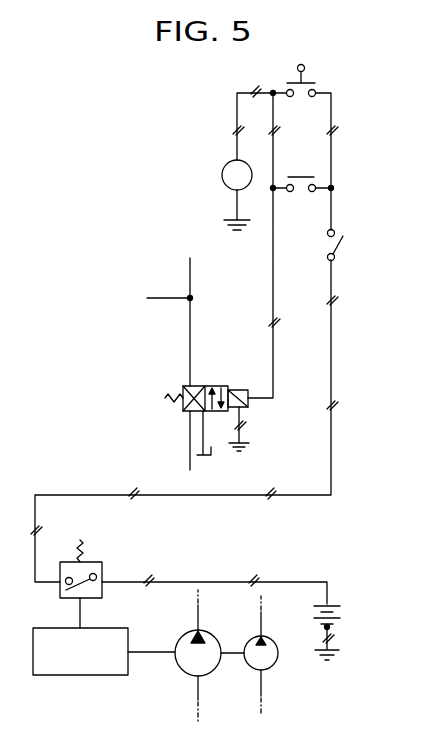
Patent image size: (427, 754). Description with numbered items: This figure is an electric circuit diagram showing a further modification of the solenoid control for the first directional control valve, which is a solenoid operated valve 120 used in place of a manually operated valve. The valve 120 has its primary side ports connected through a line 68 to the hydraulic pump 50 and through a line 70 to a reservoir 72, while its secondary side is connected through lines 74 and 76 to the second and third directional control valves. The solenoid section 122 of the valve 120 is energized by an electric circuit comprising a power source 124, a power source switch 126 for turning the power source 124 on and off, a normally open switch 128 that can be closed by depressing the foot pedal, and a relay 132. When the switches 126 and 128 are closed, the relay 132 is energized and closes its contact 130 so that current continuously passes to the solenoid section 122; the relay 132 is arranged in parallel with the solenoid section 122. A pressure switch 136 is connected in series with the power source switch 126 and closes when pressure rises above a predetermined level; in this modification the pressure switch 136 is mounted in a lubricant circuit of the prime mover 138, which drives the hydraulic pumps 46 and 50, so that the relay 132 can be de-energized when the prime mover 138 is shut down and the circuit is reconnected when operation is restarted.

The normally open switch 128 is at (286, 78).
The relay 132 is at (225, 168).
The contact 130 is at (302, 192).
The power source switch 126 is at (338, 245).
The line 74 is at (203, 268).
The line 76 is at (164, 299).
The solenoid operated valve 120 is at (215, 376).
The solenoid section 122 is at (244, 409).
The line 68 is at (190, 437).
The reservoir 72 is at (207, 456).
The line 70 is at (205, 430).
The pressure switch 136 is at (110, 540).
The power source 124 is at (340, 613).
The prime mover 138 is at (99, 676).
The hydraulic pump 46 is at (210, 672).
The hydraulic pump 50 is at (276, 664).